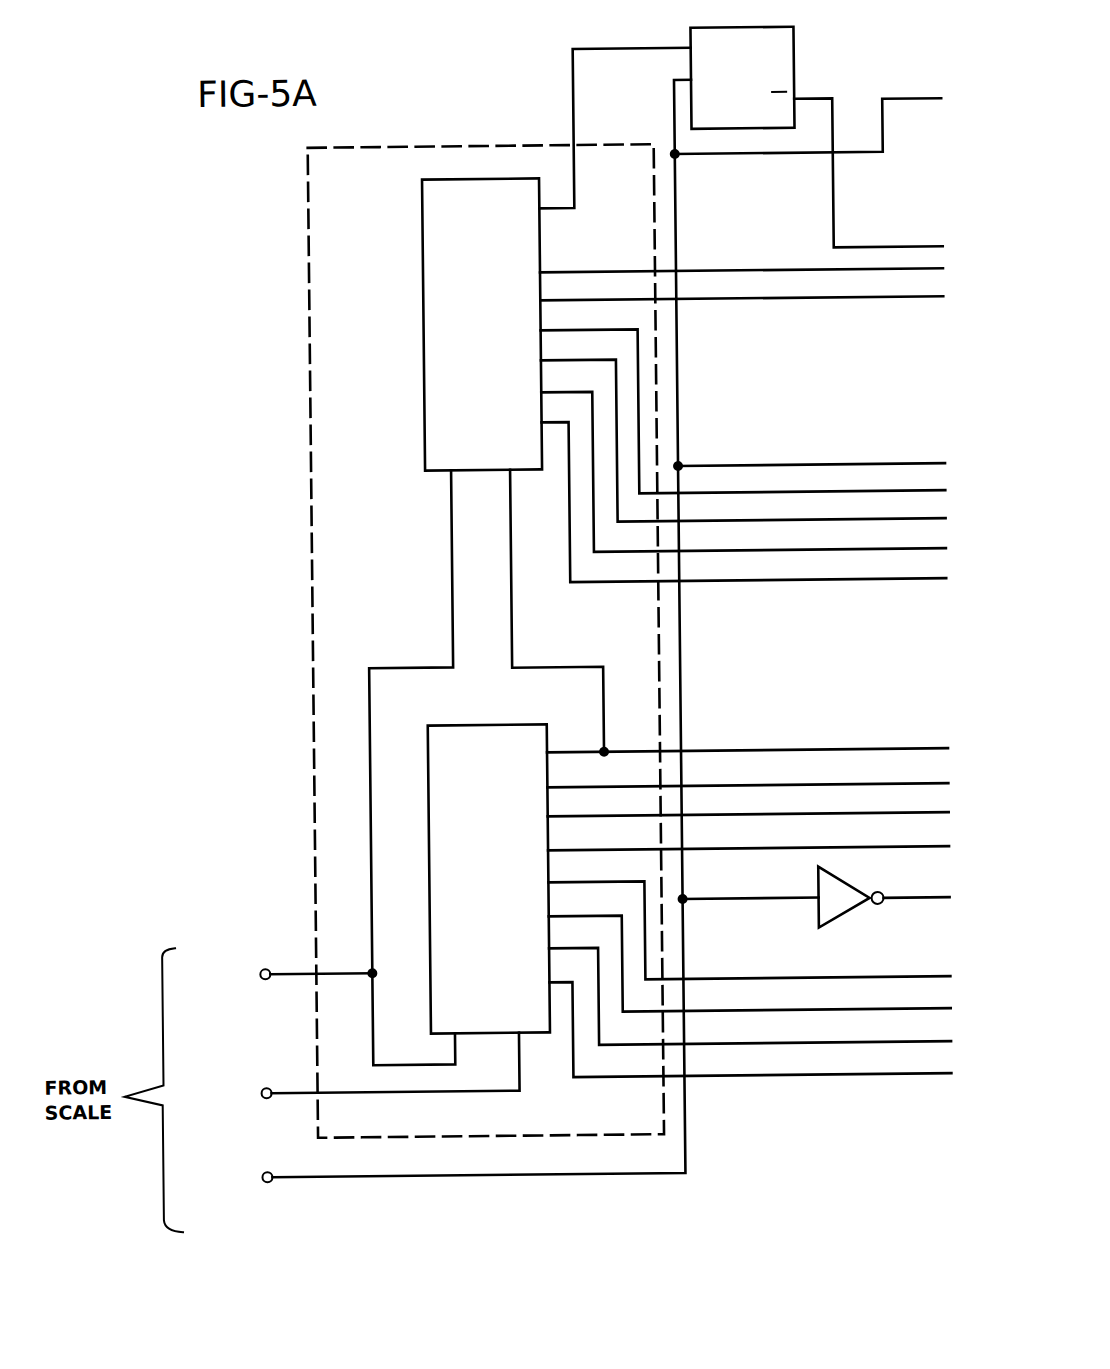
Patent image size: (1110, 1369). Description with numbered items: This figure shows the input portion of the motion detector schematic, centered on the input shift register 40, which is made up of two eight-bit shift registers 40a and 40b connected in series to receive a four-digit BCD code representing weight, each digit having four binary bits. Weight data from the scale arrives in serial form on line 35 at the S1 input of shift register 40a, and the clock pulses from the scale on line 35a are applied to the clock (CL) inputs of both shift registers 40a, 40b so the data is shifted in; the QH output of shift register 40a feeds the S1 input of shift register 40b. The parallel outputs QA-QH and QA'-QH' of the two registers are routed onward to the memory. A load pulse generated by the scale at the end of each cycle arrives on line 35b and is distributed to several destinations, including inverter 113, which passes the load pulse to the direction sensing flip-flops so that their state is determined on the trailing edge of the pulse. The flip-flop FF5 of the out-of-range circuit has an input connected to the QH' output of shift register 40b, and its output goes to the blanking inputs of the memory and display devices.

The input shift register 40 is at (306, 284).
The eight bit shift register 40a is at (460, 723).
The eight bit shift register 40b is at (424, 360).
The line 35 is at (259, 1084).
The line 35a is at (259, 964).
The line 35b is at (734, 158).
The inverter 113 is at (836, 905).
The flip-flop FF5 is at (766, 34).